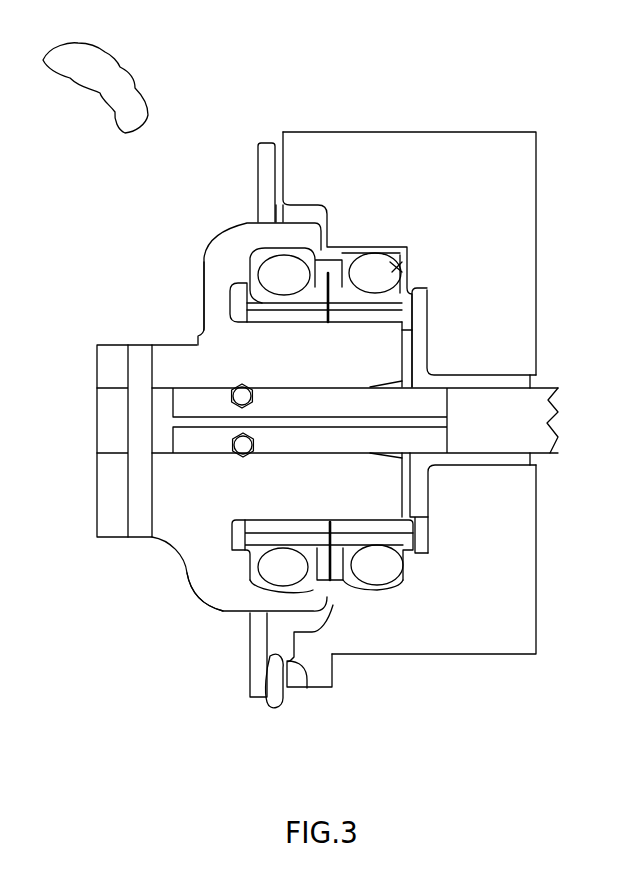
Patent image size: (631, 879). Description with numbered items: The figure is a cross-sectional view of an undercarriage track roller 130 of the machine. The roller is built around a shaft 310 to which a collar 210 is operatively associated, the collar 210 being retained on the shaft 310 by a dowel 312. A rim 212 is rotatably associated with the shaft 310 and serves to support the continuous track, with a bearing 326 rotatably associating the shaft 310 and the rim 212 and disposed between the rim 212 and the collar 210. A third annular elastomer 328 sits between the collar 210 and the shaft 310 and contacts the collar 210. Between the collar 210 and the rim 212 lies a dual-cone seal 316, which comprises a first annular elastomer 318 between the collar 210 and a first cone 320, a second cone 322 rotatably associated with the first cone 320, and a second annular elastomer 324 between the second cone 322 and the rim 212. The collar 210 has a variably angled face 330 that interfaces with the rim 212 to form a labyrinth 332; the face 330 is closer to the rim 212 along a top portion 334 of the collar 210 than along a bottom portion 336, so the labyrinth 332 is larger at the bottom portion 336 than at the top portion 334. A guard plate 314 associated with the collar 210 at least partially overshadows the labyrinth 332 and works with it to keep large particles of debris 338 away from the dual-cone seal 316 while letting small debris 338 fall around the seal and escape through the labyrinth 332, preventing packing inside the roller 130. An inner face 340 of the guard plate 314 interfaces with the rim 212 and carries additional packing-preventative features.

The undercarriage track roller 130 is at (80, 276).
The collar 210 is at (213, 237).
The rim 212 is at (537, 221).
The shaft 310 is at (202, 443).
The dowel 312 is at (148, 343).
The guard plate 314 is at (260, 170).
The dual-cone seal 316 is at (424, 301).
The first annular elastomer 318 is at (235, 287).
The first cone 320 is at (235, 300).
The second cone 322 is at (422, 290).
The second annular elastomer 324 is at (397, 268).
The bearing 326 is at (430, 508).
The third annular elastomer 328 is at (240, 456).
The variably angled face 330 is at (345, 655).
The labyrinth 332 is at (276, 216).
The top portion 334 is at (188, 256).
The bottom portion 336 is at (172, 598).
The debris 338 is at (105, 50).
The inner face 340 is at (307, 690).